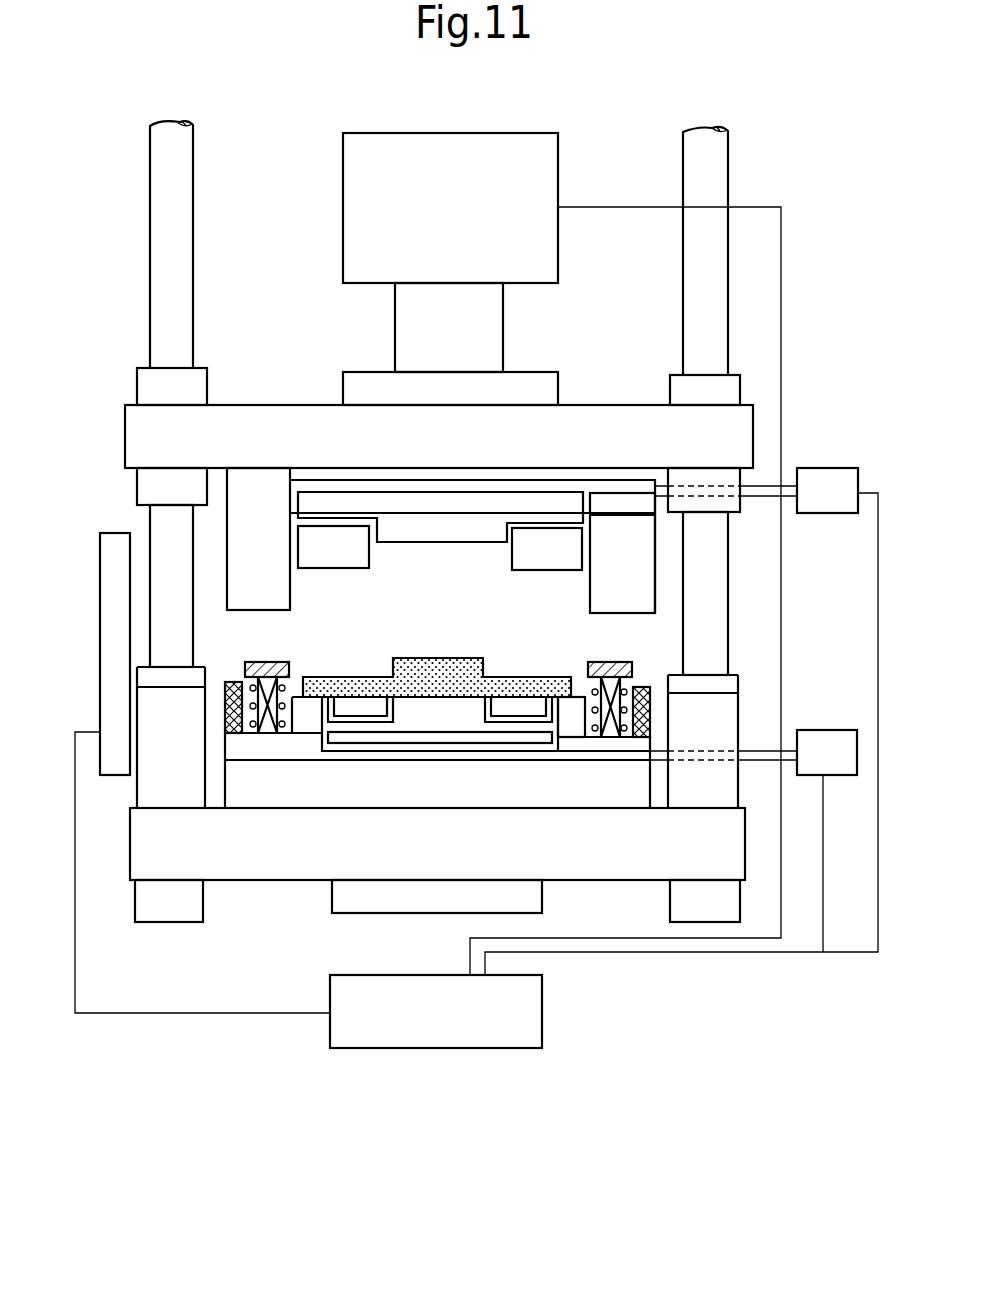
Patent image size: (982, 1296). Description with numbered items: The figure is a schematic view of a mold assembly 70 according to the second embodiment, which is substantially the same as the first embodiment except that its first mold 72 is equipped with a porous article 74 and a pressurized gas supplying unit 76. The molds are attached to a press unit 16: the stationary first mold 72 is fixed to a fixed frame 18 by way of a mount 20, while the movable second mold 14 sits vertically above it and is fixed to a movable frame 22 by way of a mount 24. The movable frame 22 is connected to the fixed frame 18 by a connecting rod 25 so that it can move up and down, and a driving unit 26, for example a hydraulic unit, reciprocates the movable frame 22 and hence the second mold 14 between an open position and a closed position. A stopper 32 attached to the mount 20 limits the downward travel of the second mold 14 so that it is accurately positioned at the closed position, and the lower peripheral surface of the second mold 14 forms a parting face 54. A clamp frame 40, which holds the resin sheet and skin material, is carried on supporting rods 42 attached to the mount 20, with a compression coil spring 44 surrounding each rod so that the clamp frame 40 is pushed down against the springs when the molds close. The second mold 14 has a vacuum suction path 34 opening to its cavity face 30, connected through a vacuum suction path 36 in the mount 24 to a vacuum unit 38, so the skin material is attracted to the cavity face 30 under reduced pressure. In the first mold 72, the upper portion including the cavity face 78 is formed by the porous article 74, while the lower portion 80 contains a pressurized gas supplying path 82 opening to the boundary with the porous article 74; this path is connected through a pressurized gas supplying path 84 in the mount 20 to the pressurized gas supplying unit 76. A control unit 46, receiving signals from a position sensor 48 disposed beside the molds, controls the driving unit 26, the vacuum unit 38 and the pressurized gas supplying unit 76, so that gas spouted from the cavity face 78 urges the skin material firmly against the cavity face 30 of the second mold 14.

The mold assembly 70 is at (710, 105).
The press unit 16 is at (148, 186).
The connecting rod 25 is at (723, 306).
The movable frame 22 is at (133, 435).
The driving unit 26 is at (345, 235).
The mount 24 is at (262, 488).
The vacuum suction path 36 is at (445, 480).
The vacuum suction path 34 is at (333, 520).
The parting face 54 is at (606, 612).
The cavity face 30 is at (327, 568).
The second mold 14 is at (590, 592).
The vacuum unit 38 is at (818, 468).
The position sensor 48 is at (108, 640).
The pressurized gas supplying unit 76 is at (815, 730).
The control unit 46 is at (437, 1048).
The fixed frame 18 is at (135, 845).
The mount 20 is at (303, 760).
The cavity face 78 is at (357, 675).
The porous article 74 is at (438, 658).
The lower portion 80 is at (468, 715).
The pressurized gas supplying path 82 is at (393, 713).
The pressurized gas supplying path 84 is at (567, 752).
The first mold 72 is at (590, 697).
The supporting rod 42 is at (266, 686).
The clamp frame 40 is at (280, 678).
The stopper 32 is at (224, 702).
The compression coil spring 44 is at (245, 735).